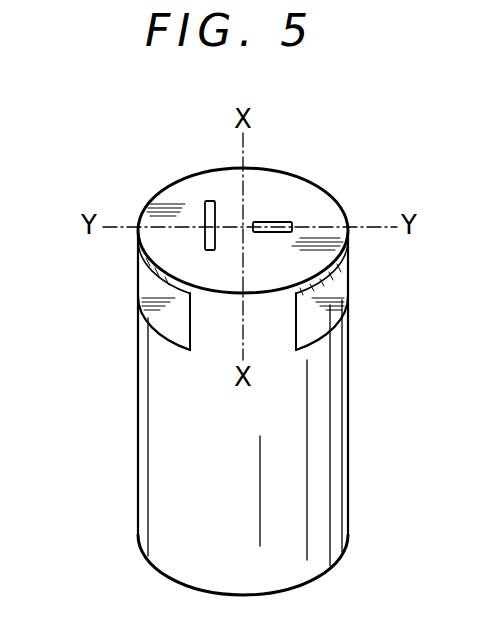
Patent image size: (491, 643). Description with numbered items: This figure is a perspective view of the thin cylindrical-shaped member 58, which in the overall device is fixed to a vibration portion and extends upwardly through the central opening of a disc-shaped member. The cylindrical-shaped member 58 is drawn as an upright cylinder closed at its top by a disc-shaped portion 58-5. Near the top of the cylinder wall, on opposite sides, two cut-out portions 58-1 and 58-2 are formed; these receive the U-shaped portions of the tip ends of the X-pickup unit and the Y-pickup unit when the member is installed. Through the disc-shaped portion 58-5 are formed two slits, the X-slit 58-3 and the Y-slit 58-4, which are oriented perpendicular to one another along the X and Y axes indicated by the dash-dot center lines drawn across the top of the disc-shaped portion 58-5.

The cylindrical-shaped member 58 is at (241, 360).
The cut-out portion 58-1 is at (349, 287).
The cut-out portion 58-2 is at (137, 287).
The X-slit 58-3 is at (296, 223).
The Y-slit 58-4 is at (203, 214).
The disc-shaped portion 58-5 is at (283, 182).